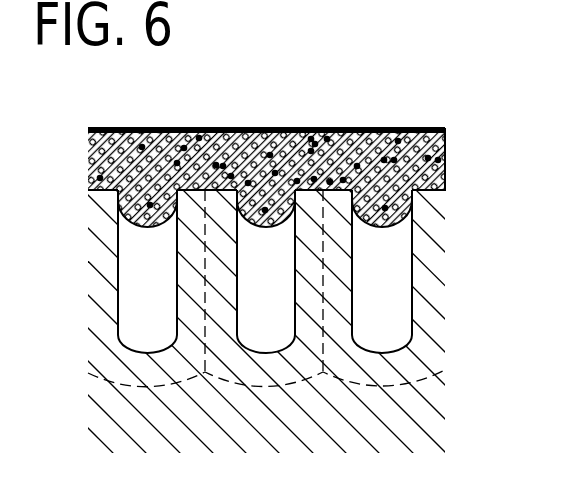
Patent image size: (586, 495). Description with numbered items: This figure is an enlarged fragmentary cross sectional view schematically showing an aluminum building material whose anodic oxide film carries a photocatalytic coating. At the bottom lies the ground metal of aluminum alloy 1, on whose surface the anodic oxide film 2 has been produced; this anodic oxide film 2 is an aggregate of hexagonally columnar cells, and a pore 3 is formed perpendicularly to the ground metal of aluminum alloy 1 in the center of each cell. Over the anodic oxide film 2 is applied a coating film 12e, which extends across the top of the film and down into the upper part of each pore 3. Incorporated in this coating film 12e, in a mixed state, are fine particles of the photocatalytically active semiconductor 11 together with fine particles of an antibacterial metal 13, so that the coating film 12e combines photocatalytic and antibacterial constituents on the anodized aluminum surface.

The ground metal of aluminum alloy 1 is at (435, 418).
The anodic oxide film 2 is at (468, 193).
The pore 3 is at (277, 297).
The fine particles of photocatalytically active semiconductor 11 is at (397, 127).
The coating film 12e is at (443, 156).
The fine particles of antibacterial metal 13 is at (255, 128).